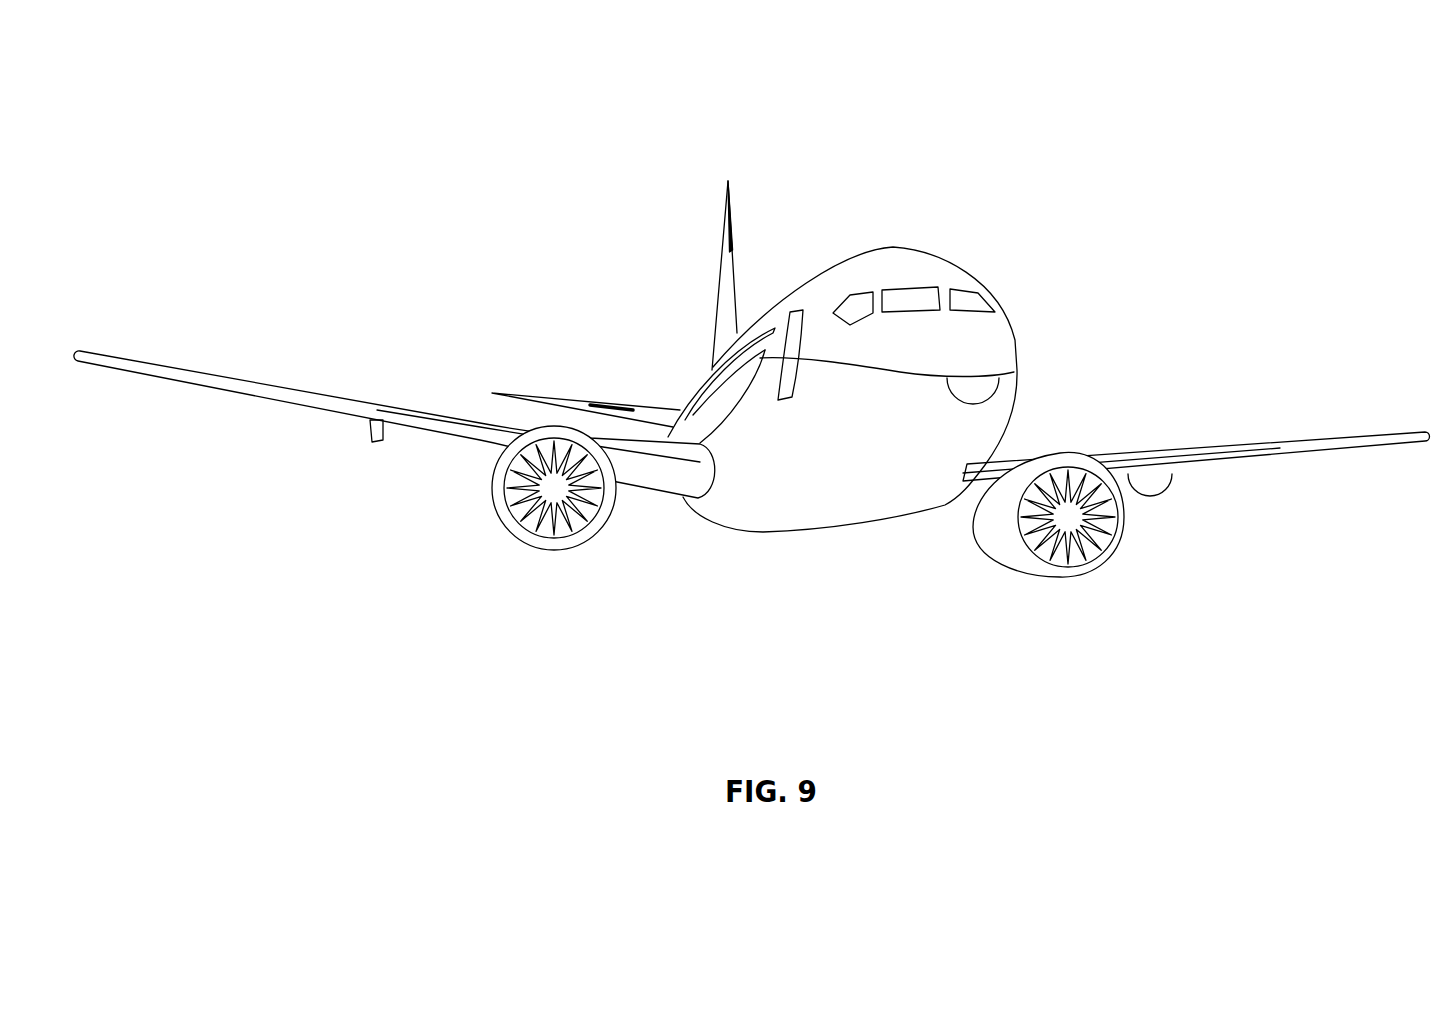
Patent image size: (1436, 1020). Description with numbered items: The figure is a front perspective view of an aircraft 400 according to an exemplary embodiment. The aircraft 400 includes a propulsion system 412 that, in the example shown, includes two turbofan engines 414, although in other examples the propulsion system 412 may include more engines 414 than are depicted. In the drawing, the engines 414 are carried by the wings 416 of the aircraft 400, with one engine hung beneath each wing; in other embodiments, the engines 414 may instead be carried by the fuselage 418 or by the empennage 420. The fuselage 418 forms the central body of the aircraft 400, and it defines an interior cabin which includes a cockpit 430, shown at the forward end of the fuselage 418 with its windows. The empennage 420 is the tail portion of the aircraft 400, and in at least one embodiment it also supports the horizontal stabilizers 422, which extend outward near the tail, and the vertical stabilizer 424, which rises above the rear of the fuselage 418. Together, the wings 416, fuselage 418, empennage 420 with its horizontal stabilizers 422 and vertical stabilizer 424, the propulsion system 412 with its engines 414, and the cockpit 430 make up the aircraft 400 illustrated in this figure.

The aircraft 400 is at (752, 361).
The propulsion system 412 is at (752, 420).
The turbofan engines 414 is at (548, 550).
The wings 416 is at (257, 383).
The fuselage 418 is at (895, 365).
The empennage 420 is at (633, 312).
The horizontal stabilizers 422 is at (543, 397).
The vertical stabilizer 424 is at (722, 238).
The cockpit 430 is at (952, 292).